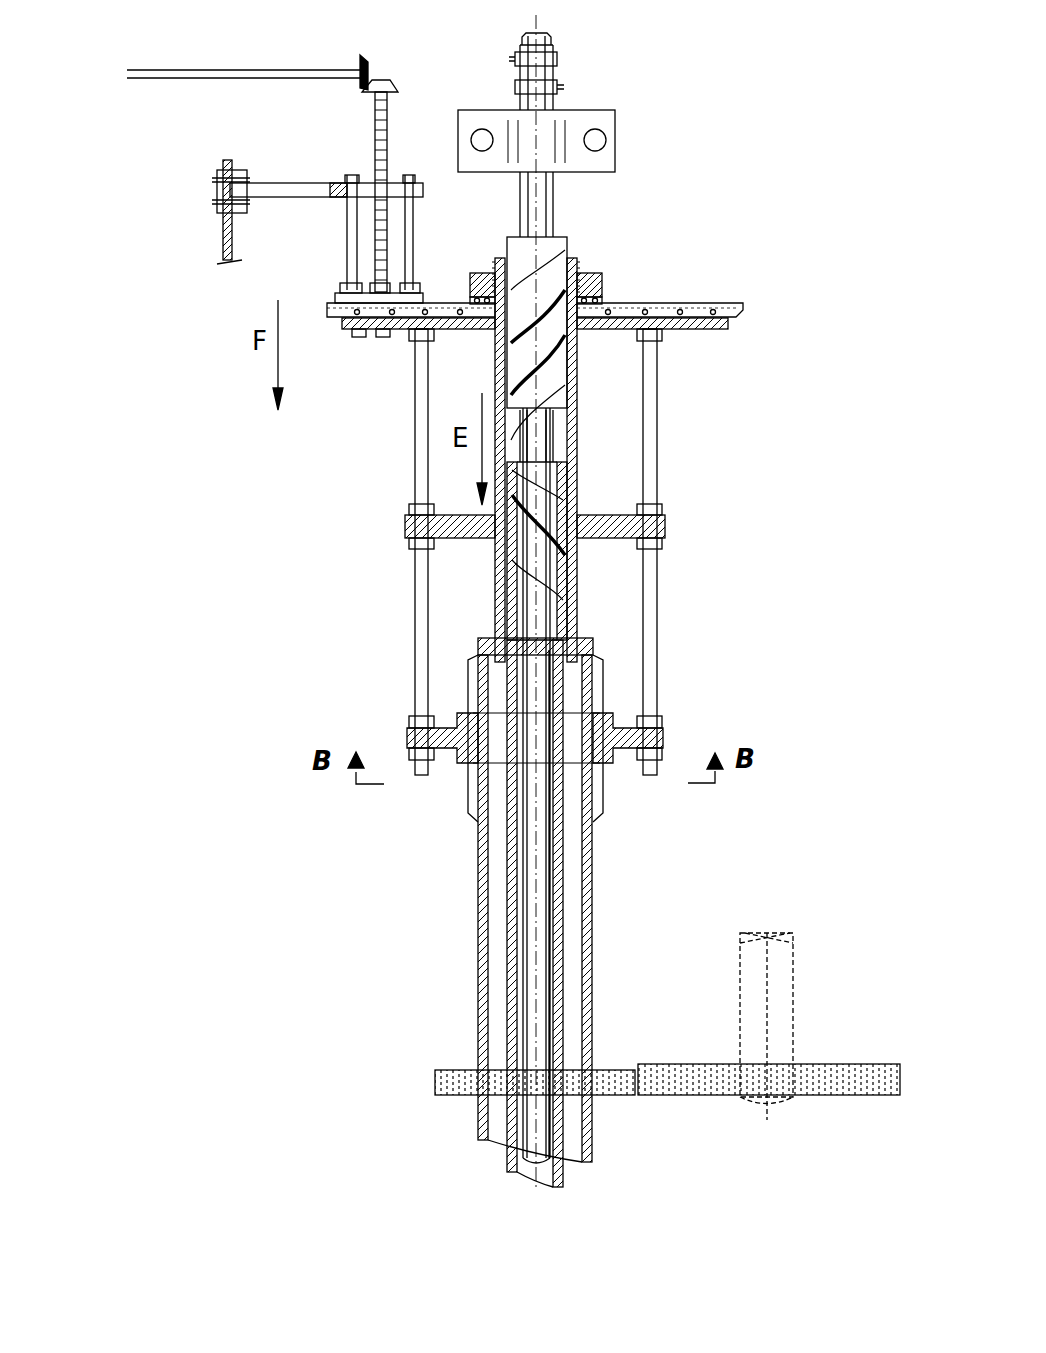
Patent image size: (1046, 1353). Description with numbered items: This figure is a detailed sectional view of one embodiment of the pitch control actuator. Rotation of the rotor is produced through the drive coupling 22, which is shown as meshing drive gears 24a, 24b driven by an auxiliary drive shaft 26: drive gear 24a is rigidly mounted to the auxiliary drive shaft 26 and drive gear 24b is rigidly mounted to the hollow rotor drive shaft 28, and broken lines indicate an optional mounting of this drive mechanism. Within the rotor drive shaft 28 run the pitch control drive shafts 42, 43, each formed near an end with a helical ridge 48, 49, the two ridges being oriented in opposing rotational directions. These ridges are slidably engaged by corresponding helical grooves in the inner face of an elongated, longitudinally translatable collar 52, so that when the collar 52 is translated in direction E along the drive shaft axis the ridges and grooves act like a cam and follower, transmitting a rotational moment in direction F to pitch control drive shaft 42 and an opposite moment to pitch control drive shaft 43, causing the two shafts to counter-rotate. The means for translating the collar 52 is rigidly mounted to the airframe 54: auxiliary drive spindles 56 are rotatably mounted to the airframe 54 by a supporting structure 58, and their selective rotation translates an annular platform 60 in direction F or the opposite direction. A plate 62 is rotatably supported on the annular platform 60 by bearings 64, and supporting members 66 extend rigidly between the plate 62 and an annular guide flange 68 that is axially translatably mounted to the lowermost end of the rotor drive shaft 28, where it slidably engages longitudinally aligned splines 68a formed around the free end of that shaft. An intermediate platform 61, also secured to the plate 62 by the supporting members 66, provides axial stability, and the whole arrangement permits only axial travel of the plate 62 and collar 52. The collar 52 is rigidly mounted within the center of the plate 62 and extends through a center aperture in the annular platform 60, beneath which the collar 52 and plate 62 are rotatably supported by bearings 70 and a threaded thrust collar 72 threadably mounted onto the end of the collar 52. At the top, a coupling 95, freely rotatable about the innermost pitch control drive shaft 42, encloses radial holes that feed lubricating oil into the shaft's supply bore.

The drive coupling 22 is at (757, 900).
The drive gear 24a is at (835, 1078).
The drive gear 24b is at (615, 1070).
The auxiliary drive shaft 26 is at (773, 997).
The rotor drive shaft 28 is at (590, 930).
The pitch control drive shaft 42 is at (558, 886).
The pitch control drive shaft 43 is at (538, 847).
The helical ridge 48 is at (540, 368).
The helical ridge 49 is at (545, 560).
The collar 52 is at (577, 432).
The airframe 54 is at (222, 230).
The auxiliary drive spindle 56 is at (388, 117).
The supporting structure 58 is at (310, 187).
The annular platform 60 is at (697, 303).
The intermediate platform 61 is at (620, 523).
The plate 62 is at (700, 330).
The bearings 64 is at (382, 333).
The supporting members 66 is at (420, 408).
The annular guide flange 68 is at (660, 740).
The splines 68a is at (600, 800).
The bearings 70 is at (605, 300).
The threaded thrust collar 72 is at (598, 272).
The coupling 95 is at (548, 60).